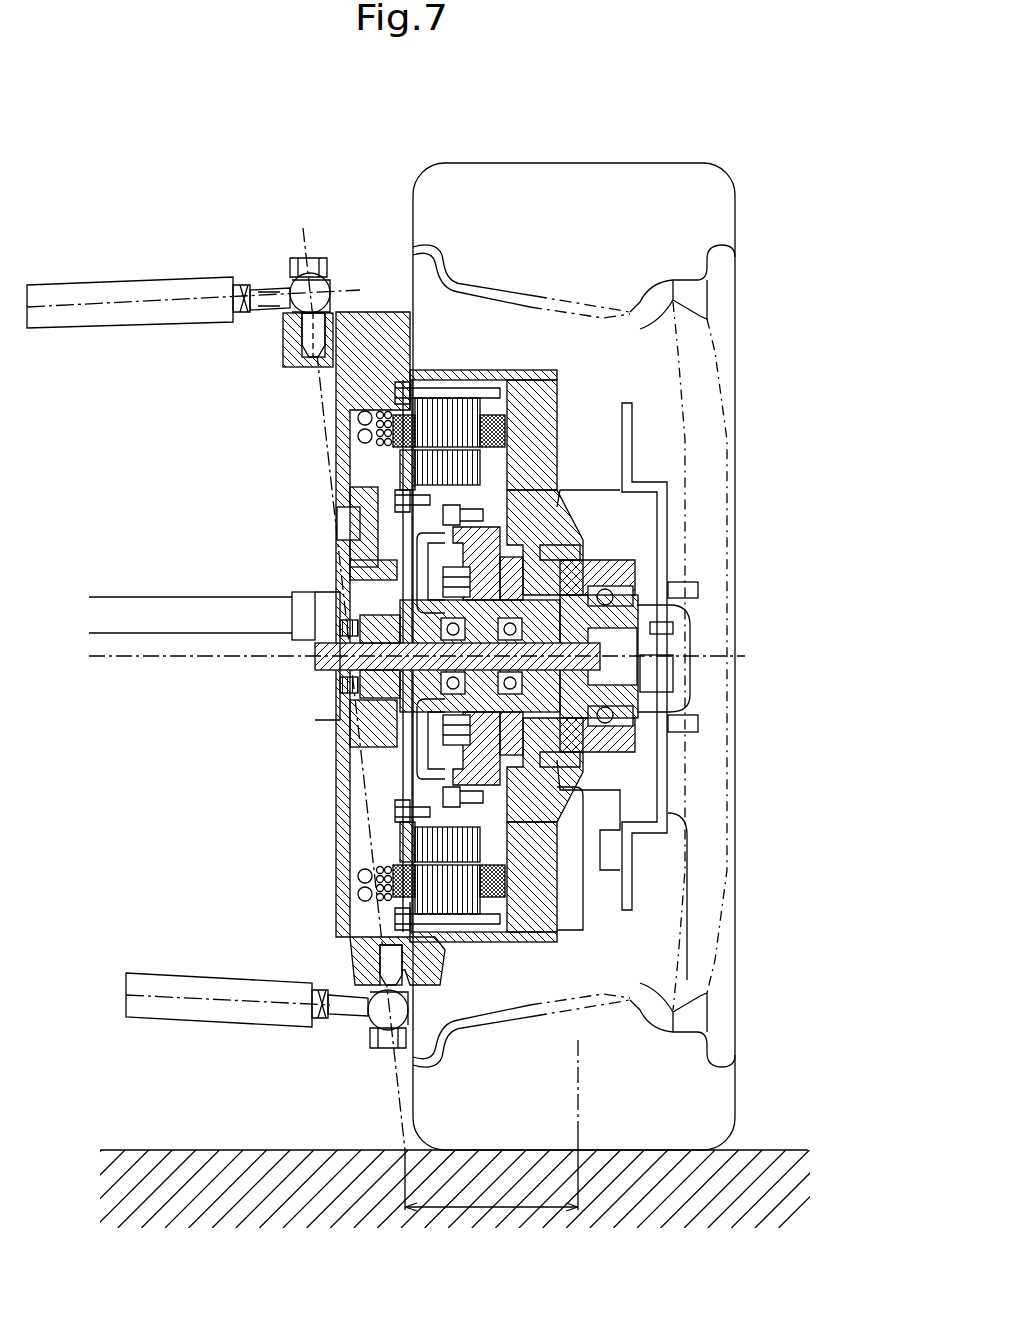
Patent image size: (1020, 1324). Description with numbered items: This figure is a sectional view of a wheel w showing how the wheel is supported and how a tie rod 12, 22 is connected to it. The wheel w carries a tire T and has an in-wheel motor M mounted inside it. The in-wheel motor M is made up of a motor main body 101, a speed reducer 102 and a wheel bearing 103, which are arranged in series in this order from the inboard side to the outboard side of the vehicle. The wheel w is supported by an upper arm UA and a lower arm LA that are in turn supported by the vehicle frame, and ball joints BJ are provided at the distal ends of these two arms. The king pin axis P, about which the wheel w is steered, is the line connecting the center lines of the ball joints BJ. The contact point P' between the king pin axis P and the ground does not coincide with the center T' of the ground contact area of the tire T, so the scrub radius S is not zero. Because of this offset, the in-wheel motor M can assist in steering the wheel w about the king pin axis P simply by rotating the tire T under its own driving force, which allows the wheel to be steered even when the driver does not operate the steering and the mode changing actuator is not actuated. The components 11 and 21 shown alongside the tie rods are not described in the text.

The tire T is at (574, 605).
The wheel W is at (612, 160).
The king pin axis P is at (306, 689).
The motor main body 101 is at (395, 466).
The tie rod 12 is at (417, 666).
The shaft 11 is at (202, 616).
The tie rod 22 is at (374, 666).
The coupling member 21 is at (457, 656).
The in-wheel motor M is at (377, 793).
The wheel bearing 103 is at (606, 796).
The speed reducer 102 is at (520, 817).
The upper arm UA is at (120, 292).
The ball joint BJ is at (308, 285).
The lower arm LA is at (248, 1013).
The scrub radius S is at (491, 1196).
The contact point P' is at (371, 1209).
The center of the ground contact area T' is at (614, 1165).